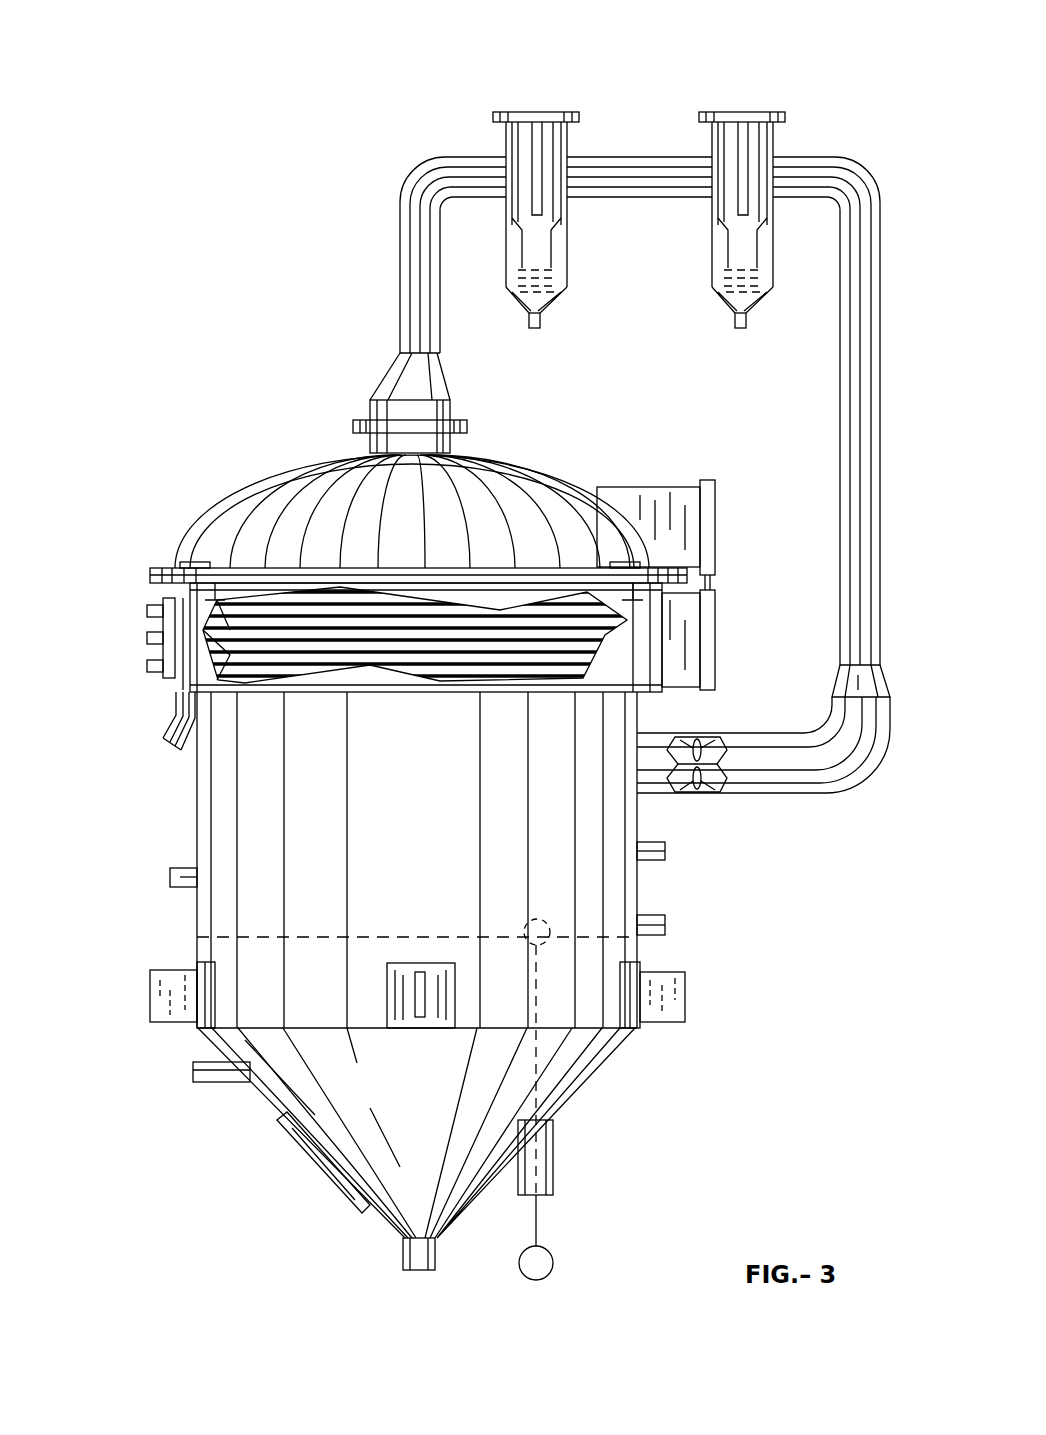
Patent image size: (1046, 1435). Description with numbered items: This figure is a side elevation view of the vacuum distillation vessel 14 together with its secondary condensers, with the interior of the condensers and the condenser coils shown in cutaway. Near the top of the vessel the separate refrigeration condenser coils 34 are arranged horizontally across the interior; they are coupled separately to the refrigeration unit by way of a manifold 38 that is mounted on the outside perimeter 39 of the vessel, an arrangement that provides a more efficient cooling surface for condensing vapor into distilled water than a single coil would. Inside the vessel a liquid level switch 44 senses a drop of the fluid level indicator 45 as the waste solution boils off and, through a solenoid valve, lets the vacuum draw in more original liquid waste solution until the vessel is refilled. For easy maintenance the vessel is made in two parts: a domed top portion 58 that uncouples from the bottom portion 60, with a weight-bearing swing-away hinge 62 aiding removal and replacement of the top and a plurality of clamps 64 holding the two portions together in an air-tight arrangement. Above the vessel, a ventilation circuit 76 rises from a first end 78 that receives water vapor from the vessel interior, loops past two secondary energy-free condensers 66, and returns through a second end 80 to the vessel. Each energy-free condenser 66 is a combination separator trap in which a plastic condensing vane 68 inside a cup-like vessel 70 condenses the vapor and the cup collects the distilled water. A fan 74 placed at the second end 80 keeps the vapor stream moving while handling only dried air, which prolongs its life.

The vacuum distillation vessel 14 is at (158, 1140).
The refrigeration condenser coils 34 is at (225, 655).
The manifold 38 is at (138, 641).
The outside perimeter 39 is at (190, 913).
The liquid level switch 44 is at (554, 1170).
The fluid level indicator 45 is at (535, 915).
The top portion 58 is at (245, 510).
The bottom portion 60 is at (178, 788).
The swing-away hinge 62 is at (682, 487).
The clamps 64 is at (188, 577).
The energy-free condensers 66 is at (510, 97).
The condensing vane 68 is at (545, 152).
The cup-like vessel 70 is at (545, 243).
The fan 74 is at (700, 760).
The ventilation circuit 76 is at (850, 490).
The first end 78 is at (396, 372).
The second end 80 is at (652, 800).